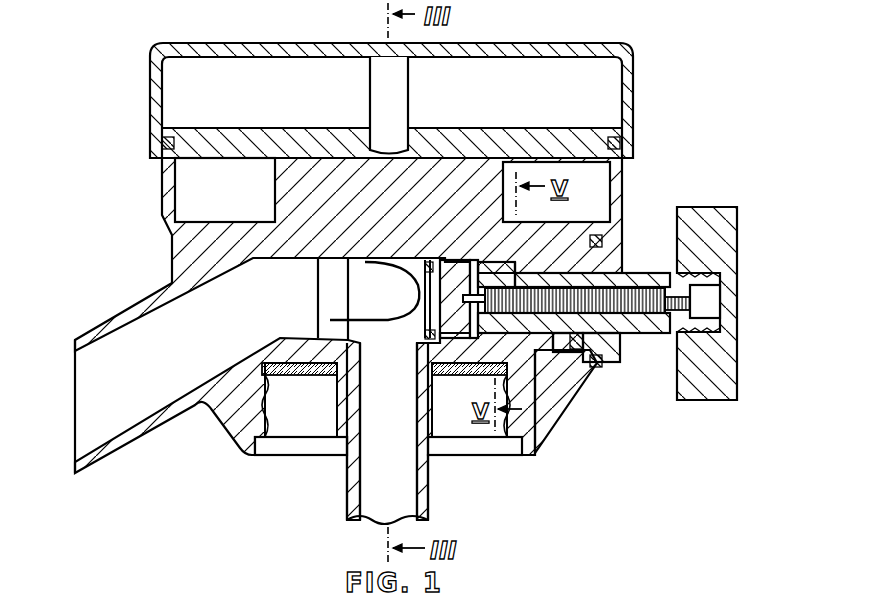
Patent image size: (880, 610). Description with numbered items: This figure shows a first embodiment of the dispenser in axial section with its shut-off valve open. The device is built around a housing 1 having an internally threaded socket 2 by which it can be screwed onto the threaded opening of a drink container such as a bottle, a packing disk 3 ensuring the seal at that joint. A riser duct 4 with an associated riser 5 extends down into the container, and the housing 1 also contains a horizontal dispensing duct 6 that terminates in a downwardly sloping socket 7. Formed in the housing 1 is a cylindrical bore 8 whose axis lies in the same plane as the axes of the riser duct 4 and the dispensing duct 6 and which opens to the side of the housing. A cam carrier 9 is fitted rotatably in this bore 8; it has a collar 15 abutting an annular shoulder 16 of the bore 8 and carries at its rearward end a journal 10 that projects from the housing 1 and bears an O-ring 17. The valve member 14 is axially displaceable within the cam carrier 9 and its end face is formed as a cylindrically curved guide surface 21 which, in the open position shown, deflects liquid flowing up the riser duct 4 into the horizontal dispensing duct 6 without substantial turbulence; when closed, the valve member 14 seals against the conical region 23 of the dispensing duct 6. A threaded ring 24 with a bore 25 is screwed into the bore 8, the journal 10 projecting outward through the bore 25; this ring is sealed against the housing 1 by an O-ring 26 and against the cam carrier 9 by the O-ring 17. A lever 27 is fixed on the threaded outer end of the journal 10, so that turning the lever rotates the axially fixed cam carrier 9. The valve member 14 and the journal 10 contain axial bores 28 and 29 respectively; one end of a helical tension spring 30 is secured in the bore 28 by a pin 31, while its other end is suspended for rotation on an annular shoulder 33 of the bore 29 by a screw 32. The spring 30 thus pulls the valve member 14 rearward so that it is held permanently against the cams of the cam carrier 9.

The housing 1 is at (213, 432).
The internally threaded socket 2 is at (527, 428).
The packing disk 3 is at (290, 378).
The riser duct 4 is at (368, 352).
The riser 5 is at (368, 502).
The dispensing duct 6 is at (258, 285).
The downwardly sloping socket 7 is at (92, 423).
The cylindrical bore 8 is at (534, 452).
The cam carrier 9 is at (460, 345).
The journal 10 is at (657, 278).
The valve member 14 is at (447, 277).
The collar 15 is at (562, 360).
The annular shoulder 16 is at (552, 360).
The O-ring 17 is at (593, 234).
The cylindrically curved guide surface 21 is at (392, 318).
The conical region 23 is at (332, 265).
The threaded ring 24 is at (600, 363).
The bore 25 is at (620, 346).
The O-ring 26 is at (598, 368).
The lever 27 is at (735, 372).
The axial bore 28 is at (562, 285).
The axial bore 29 is at (629, 288).
The helical tension spring 30 is at (517, 285).
The pin 31 is at (460, 305).
The screw 32 is at (700, 300).
The annular shoulder 33 is at (678, 290).